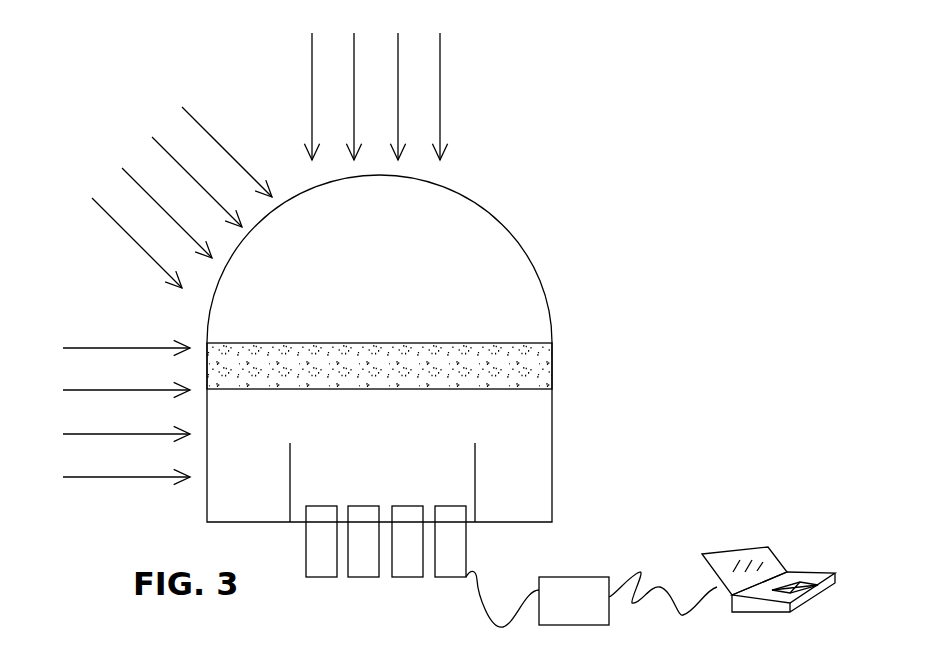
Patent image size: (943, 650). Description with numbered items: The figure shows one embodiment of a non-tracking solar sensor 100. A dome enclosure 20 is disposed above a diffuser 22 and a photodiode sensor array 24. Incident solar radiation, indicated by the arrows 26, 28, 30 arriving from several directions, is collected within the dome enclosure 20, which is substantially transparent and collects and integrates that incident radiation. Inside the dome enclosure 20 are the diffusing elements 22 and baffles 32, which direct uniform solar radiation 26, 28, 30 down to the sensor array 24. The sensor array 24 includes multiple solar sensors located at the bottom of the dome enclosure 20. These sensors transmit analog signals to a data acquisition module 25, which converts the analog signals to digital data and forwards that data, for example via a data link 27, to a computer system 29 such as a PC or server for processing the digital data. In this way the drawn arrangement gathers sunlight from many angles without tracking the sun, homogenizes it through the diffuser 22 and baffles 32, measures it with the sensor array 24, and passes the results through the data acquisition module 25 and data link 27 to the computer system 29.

The photovoltaic test system 100 is at (577, 180).
The dome enclosure 20 is at (457, 193).
The diffuser 22 is at (532, 360).
The baffles 32 is at (475, 470).
The photodiode sensor array 24 is at (490, 541).
The incident solar radiation 28 is at (375, 327).
The incident solar radiation 26 is at (182, 197).
The incident solar radiation 30 is at (110, 412).
The data acquisition module 25 is at (582, 623).
The data link 27 is at (672, 572).
The computer 29 is at (804, 547).